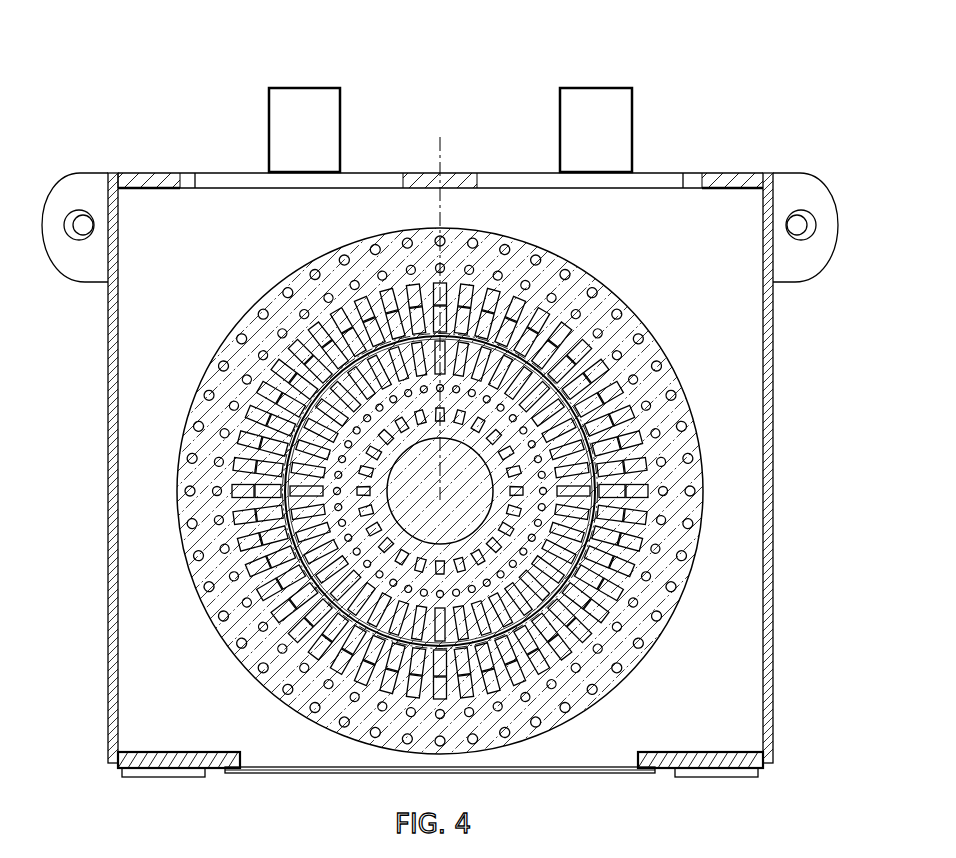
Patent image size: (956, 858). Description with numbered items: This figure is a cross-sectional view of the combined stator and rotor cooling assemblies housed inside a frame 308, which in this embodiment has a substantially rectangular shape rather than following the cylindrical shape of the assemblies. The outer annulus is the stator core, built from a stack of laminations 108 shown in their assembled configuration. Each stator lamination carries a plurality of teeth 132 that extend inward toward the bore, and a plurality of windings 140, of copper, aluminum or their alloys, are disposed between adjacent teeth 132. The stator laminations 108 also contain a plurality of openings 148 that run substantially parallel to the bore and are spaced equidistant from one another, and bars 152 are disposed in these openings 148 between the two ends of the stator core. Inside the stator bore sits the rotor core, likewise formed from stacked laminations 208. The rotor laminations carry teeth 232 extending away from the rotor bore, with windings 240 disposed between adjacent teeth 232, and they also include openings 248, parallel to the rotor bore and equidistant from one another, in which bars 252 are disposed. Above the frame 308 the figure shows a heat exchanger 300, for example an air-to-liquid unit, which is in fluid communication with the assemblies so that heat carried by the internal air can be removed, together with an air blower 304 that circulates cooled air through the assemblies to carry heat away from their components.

The plurality of laminations 108 is at (680, 447).
The plurality of teeth 132 is at (285, 370).
The plurality of windings 140 is at (325, 343).
The openings 148 is at (652, 375).
The bars 152 is at (612, 312).
The plurality of laminations 208 is at (500, 628).
The plurality of teeth 232 is at (377, 627).
The plurality of windings 240 is at (545, 566).
The openings 248 is at (500, 626).
The bars 252 is at (347, 552).
The heat exchanger 300 is at (305, 120).
The air blower 304 is at (596, 120).
The frame 308 is at (148, 177).